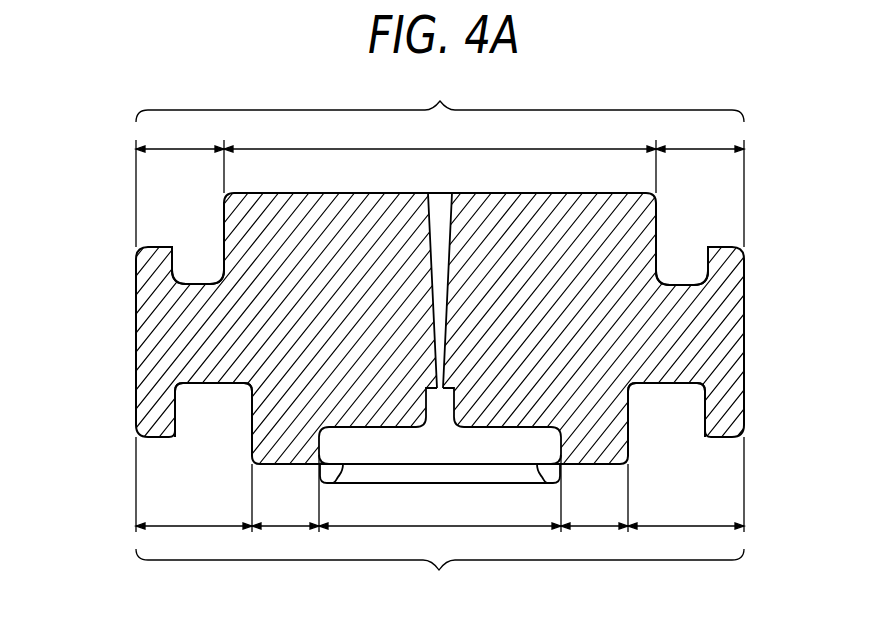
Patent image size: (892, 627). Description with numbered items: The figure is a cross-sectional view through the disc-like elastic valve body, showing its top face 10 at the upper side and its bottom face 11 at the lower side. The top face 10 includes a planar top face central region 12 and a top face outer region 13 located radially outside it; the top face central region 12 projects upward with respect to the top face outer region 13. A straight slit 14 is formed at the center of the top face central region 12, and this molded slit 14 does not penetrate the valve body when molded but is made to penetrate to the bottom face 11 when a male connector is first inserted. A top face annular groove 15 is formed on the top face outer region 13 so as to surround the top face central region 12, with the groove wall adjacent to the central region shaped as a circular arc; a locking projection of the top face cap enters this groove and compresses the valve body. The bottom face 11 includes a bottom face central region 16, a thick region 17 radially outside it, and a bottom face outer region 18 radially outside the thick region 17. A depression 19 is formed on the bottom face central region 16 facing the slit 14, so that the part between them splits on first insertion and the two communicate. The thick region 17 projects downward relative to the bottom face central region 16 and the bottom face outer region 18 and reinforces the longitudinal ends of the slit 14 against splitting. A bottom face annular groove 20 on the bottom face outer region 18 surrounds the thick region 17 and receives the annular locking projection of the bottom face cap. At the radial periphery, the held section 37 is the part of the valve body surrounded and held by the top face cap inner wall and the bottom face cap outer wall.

The top face 10 is at (446, 270).
The bottom face 11 is at (440, 574).
The top face central region 12 is at (440, 135).
The top face outer region 13 is at (440, 182).
The slit 14 is at (436, 210).
The top face annular groove 15 is at (198, 262).
The bottom face central region 16 is at (440, 540).
The thick region 17 is at (440, 506).
The bottom face outer region 18 is at (440, 497).
The depression 19 is at (436, 410).
The bottom face annular groove 20 is at (202, 403).
The held section 37 is at (155, 297).